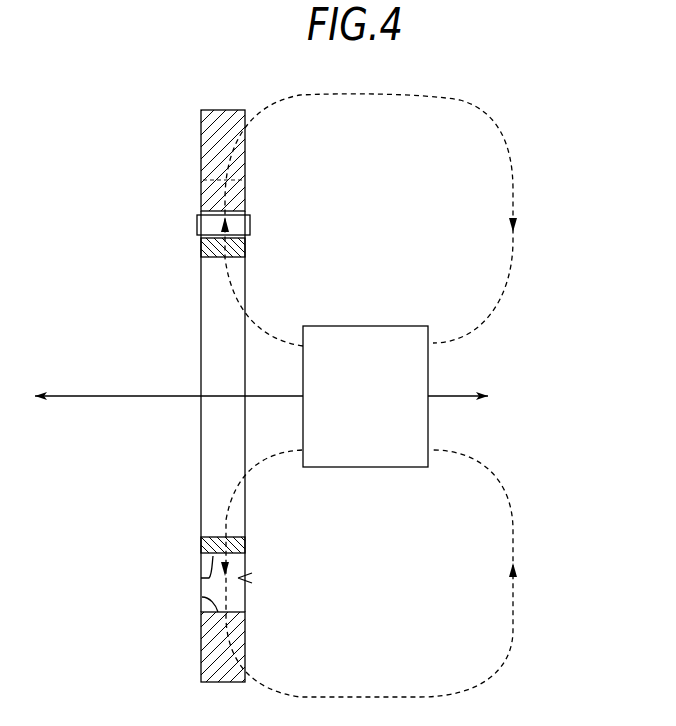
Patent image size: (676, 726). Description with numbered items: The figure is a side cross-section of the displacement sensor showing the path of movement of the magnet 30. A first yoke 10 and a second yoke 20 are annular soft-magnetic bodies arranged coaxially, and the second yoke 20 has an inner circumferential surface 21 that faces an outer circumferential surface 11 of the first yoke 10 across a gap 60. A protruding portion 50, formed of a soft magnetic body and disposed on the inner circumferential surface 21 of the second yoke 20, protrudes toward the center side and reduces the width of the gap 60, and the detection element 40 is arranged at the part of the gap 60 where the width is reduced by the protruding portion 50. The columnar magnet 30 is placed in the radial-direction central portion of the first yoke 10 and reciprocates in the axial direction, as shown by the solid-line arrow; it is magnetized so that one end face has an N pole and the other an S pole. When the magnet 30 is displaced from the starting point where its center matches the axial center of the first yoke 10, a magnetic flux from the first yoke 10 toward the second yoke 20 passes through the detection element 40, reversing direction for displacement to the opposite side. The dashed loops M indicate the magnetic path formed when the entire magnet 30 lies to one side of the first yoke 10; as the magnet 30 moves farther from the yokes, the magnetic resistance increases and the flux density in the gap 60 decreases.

The first yoke 10 is at (245, 544).
The outer circumferential surface 11 is at (201, 578).
The second yoke 20 is at (245, 628).
The inner circumferential surface 21 is at (202, 597).
The magnet 30 is at (407, 326).
The detection element 40 is at (250, 223).
The protruding portion 50 is at (242, 190).
The gap 60 is at (238, 578).
The magnetic flux M is at (513, 188).